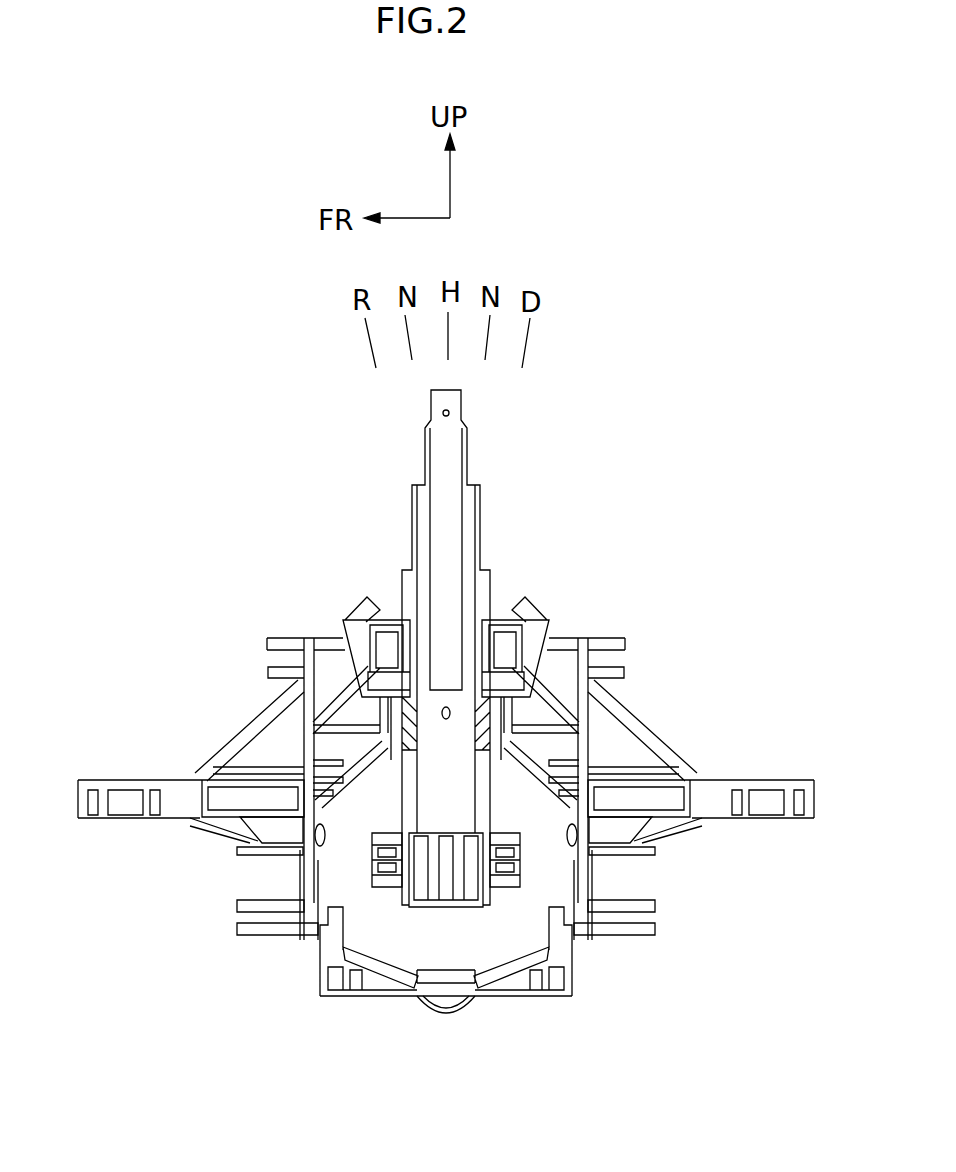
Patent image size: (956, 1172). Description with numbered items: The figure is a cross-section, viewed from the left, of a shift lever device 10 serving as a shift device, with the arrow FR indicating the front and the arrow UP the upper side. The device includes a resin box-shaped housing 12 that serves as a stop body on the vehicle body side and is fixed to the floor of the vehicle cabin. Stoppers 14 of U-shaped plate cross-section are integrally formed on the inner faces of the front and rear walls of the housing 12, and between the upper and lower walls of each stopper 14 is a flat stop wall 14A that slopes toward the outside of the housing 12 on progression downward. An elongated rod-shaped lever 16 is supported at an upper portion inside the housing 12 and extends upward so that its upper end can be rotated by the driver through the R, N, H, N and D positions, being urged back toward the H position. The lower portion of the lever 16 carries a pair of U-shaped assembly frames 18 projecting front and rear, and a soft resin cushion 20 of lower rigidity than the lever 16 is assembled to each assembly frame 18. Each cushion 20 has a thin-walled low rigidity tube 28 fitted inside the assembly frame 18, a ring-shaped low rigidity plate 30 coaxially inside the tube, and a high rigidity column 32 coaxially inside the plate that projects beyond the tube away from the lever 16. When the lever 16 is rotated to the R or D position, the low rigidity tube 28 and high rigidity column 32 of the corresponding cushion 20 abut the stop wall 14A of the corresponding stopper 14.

The shift lever device 10 is at (188, 478).
The housing 12 is at (312, 638).
The stopper 14 is at (592, 768).
The stop wall 14A is at (589, 866).
The lever 16 is at (486, 483).
The assembly frame 18 is at (501, 828).
The cushion 20 is at (532, 870).
The low rigidity tube 28 is at (504, 880).
The low rigidity plate 30 is at (589, 853).
The high rigidity column 32 is at (574, 927).